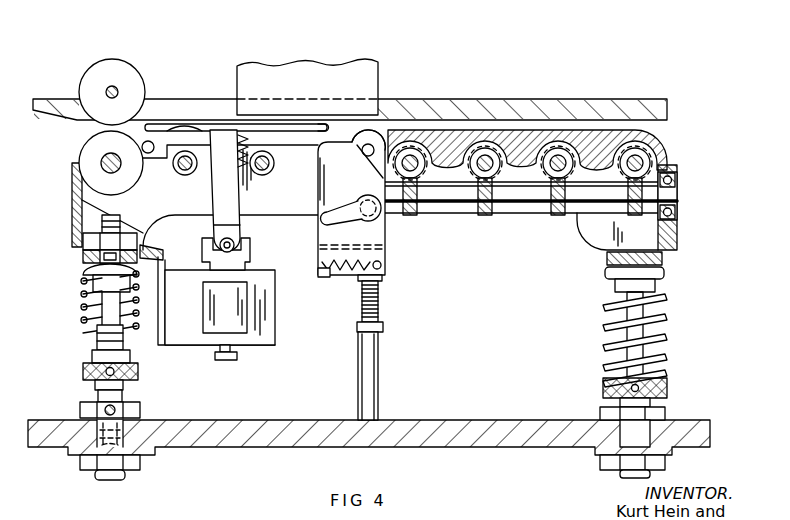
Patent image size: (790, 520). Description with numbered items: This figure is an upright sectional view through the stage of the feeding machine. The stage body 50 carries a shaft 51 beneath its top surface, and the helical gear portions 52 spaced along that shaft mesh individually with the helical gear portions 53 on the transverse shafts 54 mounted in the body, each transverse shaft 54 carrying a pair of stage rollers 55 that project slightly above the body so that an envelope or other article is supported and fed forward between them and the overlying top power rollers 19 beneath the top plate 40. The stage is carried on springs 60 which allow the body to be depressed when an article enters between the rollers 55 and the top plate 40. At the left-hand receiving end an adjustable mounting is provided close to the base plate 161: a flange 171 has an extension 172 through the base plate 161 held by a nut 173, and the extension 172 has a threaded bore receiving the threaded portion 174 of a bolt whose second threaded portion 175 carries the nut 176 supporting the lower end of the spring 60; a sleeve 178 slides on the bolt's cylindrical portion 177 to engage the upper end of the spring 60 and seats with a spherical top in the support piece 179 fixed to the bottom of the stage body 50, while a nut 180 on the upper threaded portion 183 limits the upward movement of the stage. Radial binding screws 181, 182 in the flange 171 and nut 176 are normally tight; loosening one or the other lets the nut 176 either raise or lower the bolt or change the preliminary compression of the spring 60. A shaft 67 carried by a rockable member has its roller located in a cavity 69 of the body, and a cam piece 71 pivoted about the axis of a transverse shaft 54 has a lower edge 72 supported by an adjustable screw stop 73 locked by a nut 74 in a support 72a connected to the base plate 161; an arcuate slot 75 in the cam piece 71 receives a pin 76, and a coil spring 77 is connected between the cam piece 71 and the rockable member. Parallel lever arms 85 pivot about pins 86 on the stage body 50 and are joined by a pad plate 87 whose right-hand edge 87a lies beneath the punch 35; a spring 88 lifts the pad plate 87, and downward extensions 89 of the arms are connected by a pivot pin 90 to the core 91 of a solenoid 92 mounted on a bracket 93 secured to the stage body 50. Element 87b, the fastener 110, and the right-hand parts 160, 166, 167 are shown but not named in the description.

The top power rollers 19 is at (93, 70).
The punch 35 is at (262, 62).
The top plate 40 is at (475, 104).
The stage body 50 is at (613, 233).
The shaft 51 is at (600, 196).
The helical gear portions 52 is at (473, 208).
The helical gear portions 53 is at (557, 155).
The transverse shafts 54 is at (103, 161).
The stage rollers 55 is at (90, 177).
The springs 60 is at (665, 318).
The transverse shaft 67 is at (372, 146).
The cavity 69 is at (393, 141).
The cam piece 71 is at (378, 246).
The lower edge 72 is at (345, 279).
The support 72a is at (380, 368).
The adjustable screw stop 73 is at (380, 300).
The nut 74 is at (385, 326).
The slot 75 is at (330, 218).
The pin 76 is at (380, 216).
The coil spring 77 is at (377, 271).
The lever arms 85 is at (182, 140).
The pins 86 is at (149, 141).
The pad plate 87 is at (303, 125).
The right-hand edge 87a is at (328, 128).
The arm 87b is at (221, 129).
The spring 88 is at (240, 168).
The downward extensions 89 is at (216, 222).
The pivot pin 90 is at (234, 243).
The core 91 is at (232, 262).
The solenoid 92 is at (270, 323).
The bracket 93 is at (162, 346).
The fastener 110 is at (238, 354).
The nut 160 is at (665, 411).
The base plate 161 is at (255, 448).
The washer 166 is at (665, 259).
The knurled nut 167 is at (603, 387).
The flange 171 is at (80, 411).
The extension 172 is at (122, 432).
The nut 173 is at (140, 463).
The threaded portion 174 is at (97, 396).
The second threaded portion 175 is at (97, 336).
The nut 176 is at (85, 368).
The cylindrical portion 177 is at (97, 308).
The sleeve 178 is at (85, 271).
The support piece 179 is at (83, 256).
The nut 180 is at (85, 240).
The radial binding screw 181 is at (125, 411).
The radial binding screw 182 is at (125, 379).
The upper threaded portion 183 is at (100, 220).